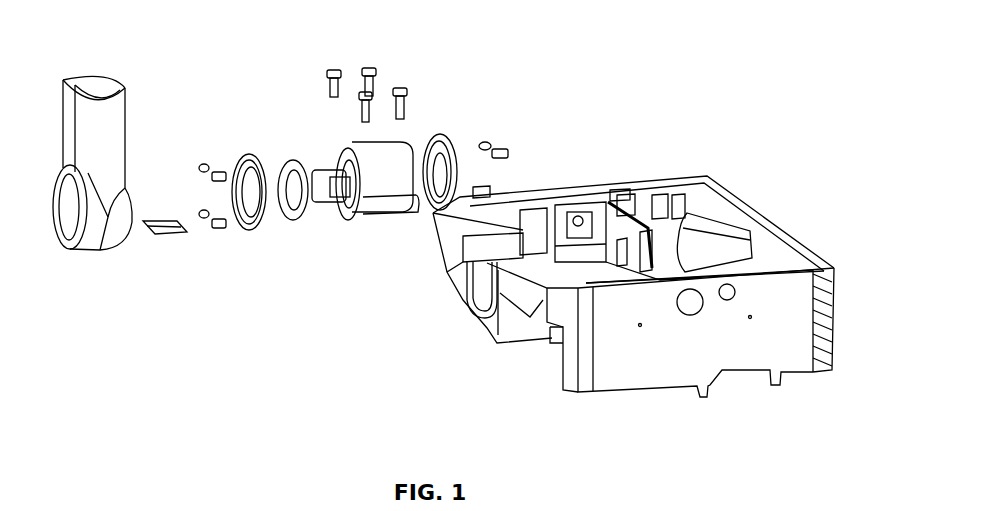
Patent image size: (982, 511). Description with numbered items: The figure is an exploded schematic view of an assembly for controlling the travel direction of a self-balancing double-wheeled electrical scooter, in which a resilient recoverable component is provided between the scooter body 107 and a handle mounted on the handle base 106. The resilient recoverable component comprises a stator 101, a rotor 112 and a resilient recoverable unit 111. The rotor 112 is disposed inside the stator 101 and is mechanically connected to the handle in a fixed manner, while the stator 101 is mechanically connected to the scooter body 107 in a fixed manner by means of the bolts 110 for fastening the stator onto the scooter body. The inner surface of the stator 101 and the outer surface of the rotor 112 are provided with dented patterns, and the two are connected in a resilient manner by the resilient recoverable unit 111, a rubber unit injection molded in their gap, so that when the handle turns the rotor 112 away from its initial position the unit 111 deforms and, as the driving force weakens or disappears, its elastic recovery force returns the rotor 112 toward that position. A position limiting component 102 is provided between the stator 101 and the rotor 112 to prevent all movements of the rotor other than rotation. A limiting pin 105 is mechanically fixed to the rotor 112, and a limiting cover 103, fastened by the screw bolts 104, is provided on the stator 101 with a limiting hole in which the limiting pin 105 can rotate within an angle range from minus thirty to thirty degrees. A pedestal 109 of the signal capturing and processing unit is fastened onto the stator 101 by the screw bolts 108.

The stator 101 is at (378, 220).
The position limiting component 102 is at (295, 226).
The limiting cover 103 is at (250, 231).
The screw bolts for fastening the limiting cover 104 is at (221, 238).
The limiting pin 105 is at (183, 241).
The handle base 106 is at (99, 250).
The scooter body 107 is at (647, 181).
The screw bolts for fastening the signal capturing and processing unit onto the stat 108 is at (508, 147).
The pedestal of the signal capturing and processing unit 109 is at (448, 137).
The bolts for fastening the stator onto the scooter body 110 is at (378, 110).
The resilient recoverable unit 111 is at (347, 153).
The rotor 112 is at (327, 173).